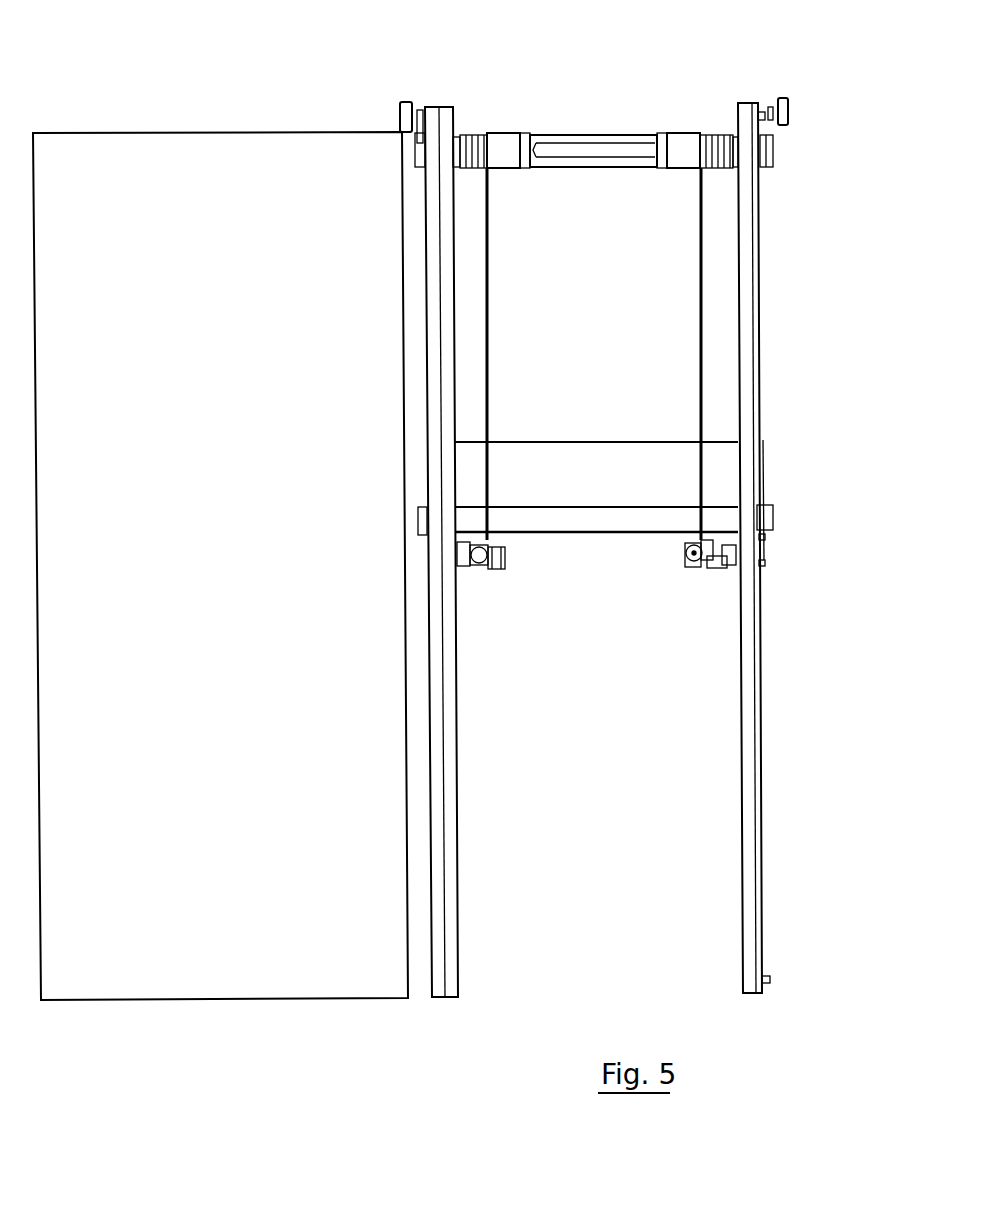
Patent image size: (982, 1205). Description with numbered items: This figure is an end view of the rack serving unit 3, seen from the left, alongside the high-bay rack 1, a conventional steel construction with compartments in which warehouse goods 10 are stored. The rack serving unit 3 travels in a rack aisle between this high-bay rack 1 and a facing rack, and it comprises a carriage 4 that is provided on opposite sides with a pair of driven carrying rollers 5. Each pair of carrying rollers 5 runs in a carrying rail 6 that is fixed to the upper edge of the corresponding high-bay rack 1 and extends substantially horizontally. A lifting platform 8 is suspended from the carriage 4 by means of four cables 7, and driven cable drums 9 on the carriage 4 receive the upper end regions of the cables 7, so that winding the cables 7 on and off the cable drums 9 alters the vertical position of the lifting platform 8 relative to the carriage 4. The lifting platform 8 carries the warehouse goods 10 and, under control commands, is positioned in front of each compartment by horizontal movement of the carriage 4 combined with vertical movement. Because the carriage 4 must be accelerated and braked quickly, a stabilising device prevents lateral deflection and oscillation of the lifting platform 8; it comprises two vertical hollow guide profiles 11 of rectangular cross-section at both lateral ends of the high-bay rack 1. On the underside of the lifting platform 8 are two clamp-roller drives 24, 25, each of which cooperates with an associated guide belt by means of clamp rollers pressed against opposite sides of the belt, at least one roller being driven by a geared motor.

The high-bay rack 1 is at (219, 404).
The rack serving unit 3 is at (580, 600).
The carriage 4 is at (568, 133).
The carrying rollers 5 is at (415, 108).
The carrying rail 6 is at (400, 118).
The cables 7 is at (488, 286).
The lifting platform 8 is at (618, 515).
The cable drums 9 is at (495, 135).
The warehouse goods 10 is at (557, 458).
The hollow guide profiles 11 is at (455, 937).
The clamp-roller drive 24 is at (700, 582).
The clamp-roller drive 25 is at (477, 588).